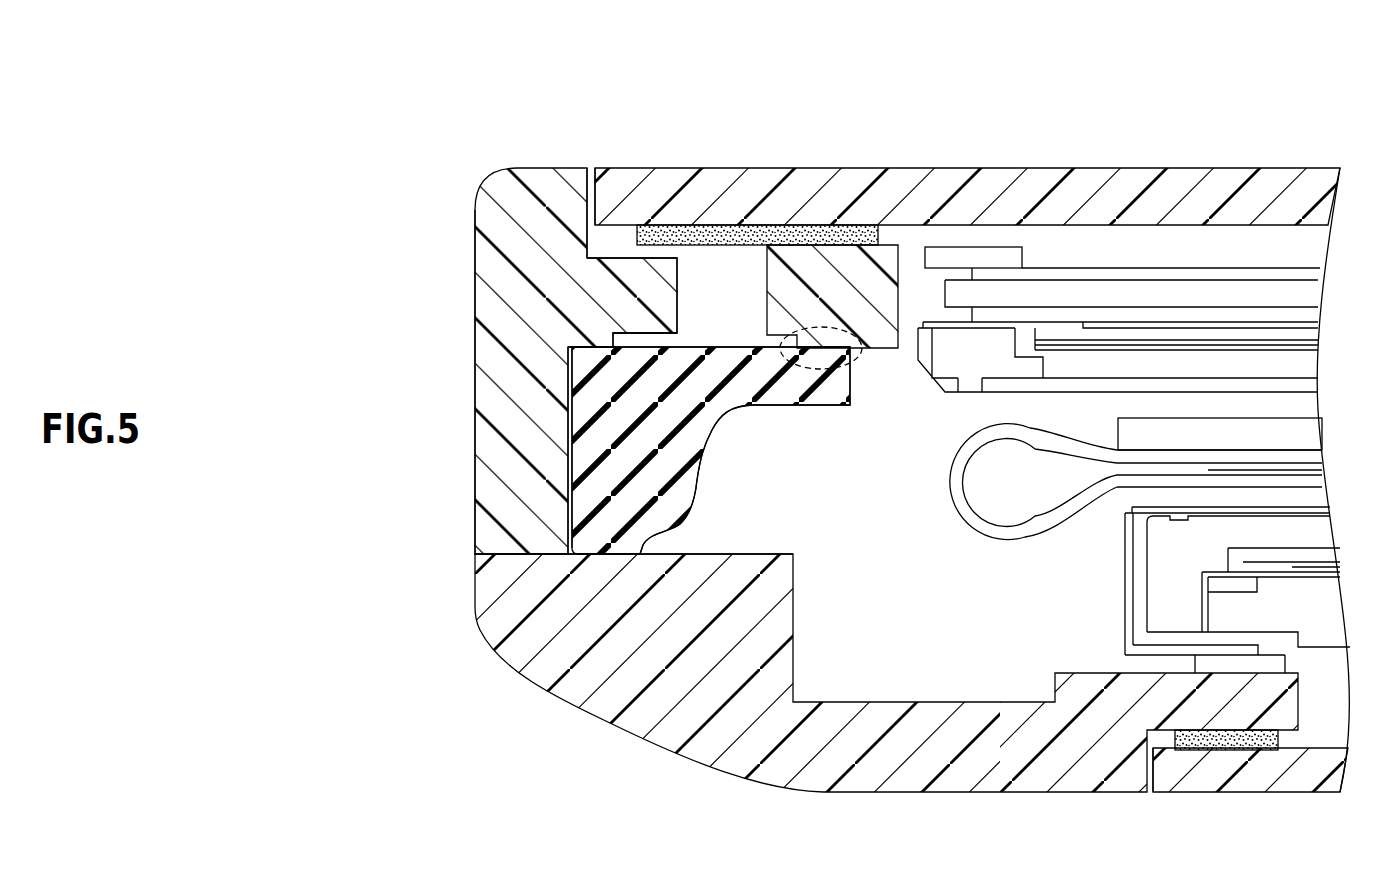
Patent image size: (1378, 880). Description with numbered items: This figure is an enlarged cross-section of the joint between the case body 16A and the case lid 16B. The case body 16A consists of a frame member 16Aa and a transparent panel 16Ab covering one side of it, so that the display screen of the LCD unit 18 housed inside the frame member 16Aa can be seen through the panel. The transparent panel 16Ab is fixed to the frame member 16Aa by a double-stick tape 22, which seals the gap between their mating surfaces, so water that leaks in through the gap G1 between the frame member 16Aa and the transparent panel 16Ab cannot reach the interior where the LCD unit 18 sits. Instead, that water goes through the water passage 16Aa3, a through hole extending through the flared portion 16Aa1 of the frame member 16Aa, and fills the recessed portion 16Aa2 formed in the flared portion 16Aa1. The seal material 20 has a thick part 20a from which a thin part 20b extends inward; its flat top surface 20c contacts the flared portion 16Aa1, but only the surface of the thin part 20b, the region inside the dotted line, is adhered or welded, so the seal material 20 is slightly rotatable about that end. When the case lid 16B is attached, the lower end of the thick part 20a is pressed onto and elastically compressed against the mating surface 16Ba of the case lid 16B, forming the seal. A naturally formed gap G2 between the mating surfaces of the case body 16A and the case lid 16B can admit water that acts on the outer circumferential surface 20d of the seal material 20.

The case body 16A is at (493, 158).
The frame member 16Aa is at (520, 383).
The flared portion 16Aa1 is at (830, 287).
The recessed portion 16Aa2 is at (643, 343).
The water passage 16Aa3 is at (728, 300).
The transparent panel 16Ab is at (1045, 200).
The case lid 16B is at (975, 760).
The mating surface 16Ba is at (708, 553).
The LCD unit 18 is at (1224, 238).
The seal material 20 is at (597, 480).
The thick part 20a is at (637, 487).
The thin part 20b is at (833, 383).
The top surface 20c is at (722, 345).
The outer circumferential surface 20d is at (570, 423).
The double-stick tape 22 is at (727, 223).
The gap G1 is at (591, 156).
The gap G2 is at (463, 553).